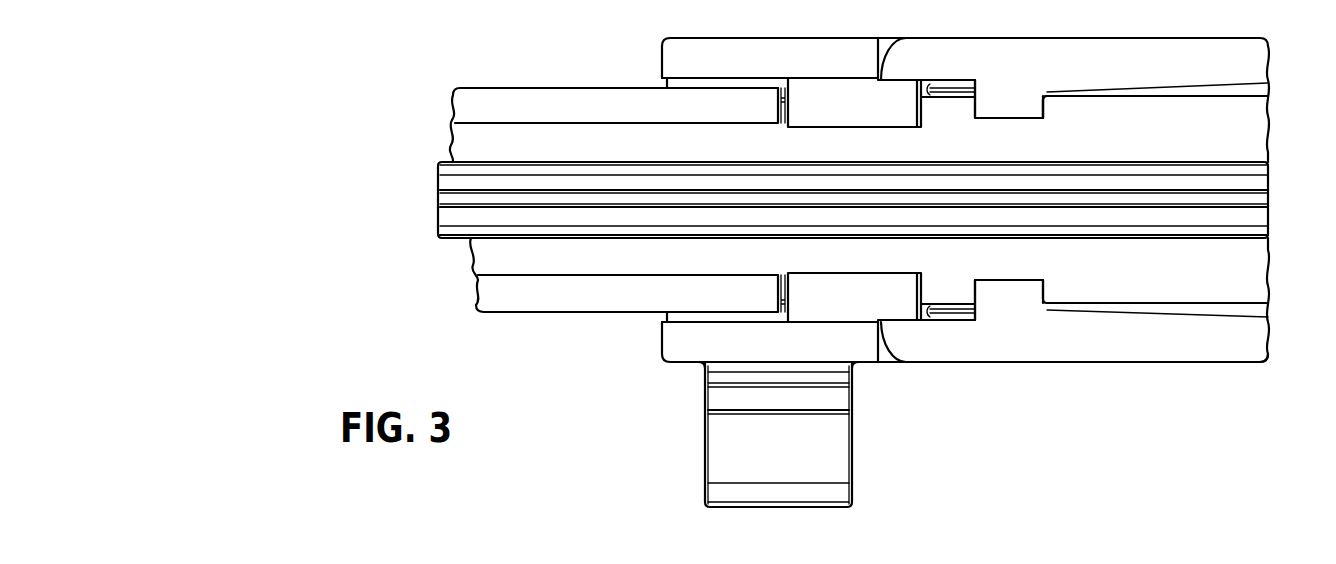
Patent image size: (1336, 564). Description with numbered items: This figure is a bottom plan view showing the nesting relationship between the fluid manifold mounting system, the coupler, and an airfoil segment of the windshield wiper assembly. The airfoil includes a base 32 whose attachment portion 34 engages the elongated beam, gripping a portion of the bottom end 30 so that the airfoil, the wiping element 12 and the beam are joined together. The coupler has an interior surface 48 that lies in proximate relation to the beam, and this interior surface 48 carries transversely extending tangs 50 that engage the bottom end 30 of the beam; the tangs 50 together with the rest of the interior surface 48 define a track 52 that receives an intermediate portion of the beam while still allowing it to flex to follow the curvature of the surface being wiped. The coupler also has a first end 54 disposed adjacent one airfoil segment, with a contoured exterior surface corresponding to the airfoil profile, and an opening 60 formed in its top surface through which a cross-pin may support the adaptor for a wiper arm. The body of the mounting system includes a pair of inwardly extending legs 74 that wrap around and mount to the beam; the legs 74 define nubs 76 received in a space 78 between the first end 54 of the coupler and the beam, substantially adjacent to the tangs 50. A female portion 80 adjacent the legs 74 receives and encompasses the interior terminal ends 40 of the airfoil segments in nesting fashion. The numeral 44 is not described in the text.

The wiping element 12 is at (314, 0).
The bottom end 30 is at (608, 133).
The base 32 is at (508, 88).
The attachment portion 34 is at (556, 94).
The interior terminal ends 40 is at (790, 110).
The frame member 44 is at (172, 11).
The interior surface 48 is at (1136, 91).
The tangs 50 is at (1014, 110).
The track 52 is at (1049, 106).
The first end 54 is at (906, 46).
The opening 60 is at (697, 450).
The legs 74 is at (848, 120).
The nubs 76 is at (917, 112).
The space 78 is at (946, 88).
The female portion 80 is at (706, 78).